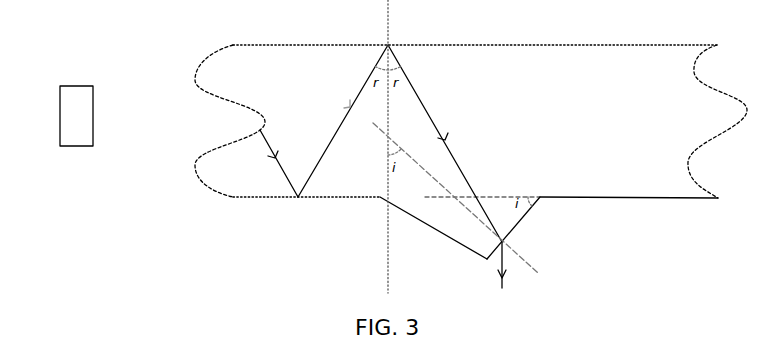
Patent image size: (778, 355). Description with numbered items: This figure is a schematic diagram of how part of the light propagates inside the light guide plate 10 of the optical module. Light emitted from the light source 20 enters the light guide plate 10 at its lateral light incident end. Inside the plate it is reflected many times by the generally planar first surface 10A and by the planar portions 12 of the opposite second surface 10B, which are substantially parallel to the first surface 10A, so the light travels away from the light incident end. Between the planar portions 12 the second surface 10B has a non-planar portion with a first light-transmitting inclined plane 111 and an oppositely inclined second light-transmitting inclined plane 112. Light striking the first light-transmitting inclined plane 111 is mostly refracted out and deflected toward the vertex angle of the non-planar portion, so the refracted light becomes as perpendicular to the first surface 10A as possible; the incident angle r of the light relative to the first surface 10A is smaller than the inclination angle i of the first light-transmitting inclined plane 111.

The light source 20 is at (77, 100).
The light guide plate 10 is at (471, 142).
The first surface 10A is at (485, 45).
The second surface 10B is at (673, 208).
The planar portion 12 is at (268, 199).
The second light-transmitting inclined plane 112 is at (423, 223).
The first light-transmitting inclined plane 111 is at (510, 230).